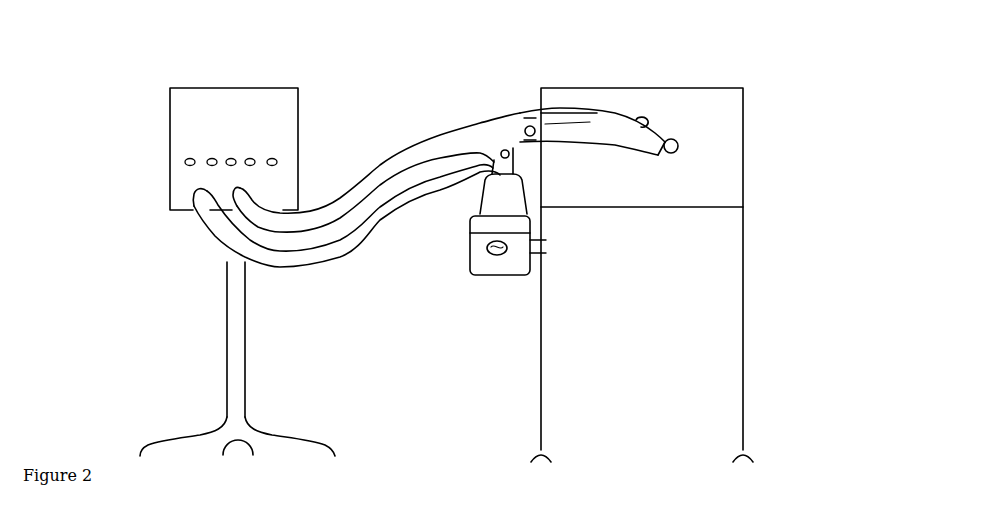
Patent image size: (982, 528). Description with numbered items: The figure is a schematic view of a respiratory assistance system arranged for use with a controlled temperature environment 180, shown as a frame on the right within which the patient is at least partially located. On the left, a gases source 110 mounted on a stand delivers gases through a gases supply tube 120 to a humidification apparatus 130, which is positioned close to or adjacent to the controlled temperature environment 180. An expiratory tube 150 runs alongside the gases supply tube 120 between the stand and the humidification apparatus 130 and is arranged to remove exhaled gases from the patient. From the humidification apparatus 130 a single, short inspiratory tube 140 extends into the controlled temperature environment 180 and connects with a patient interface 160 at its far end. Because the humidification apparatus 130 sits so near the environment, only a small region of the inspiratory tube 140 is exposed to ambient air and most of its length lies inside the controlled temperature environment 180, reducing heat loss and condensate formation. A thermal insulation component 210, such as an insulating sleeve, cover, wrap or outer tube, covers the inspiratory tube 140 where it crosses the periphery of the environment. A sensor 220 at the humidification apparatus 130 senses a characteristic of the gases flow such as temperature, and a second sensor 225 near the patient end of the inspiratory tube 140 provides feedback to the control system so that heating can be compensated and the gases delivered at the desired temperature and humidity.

The gases source 110 is at (183, 100).
The gases supply tube 120 is at (242, 247).
The humidification apparatus 130 is at (478, 263).
The inspiratory tube 140 is at (572, 138).
The expiratory tube 150 is at (395, 163).
The patient interface 160 is at (678, 148).
The controlled temperature environment 180 is at (745, 167).
The thermal insulation component 210 is at (530, 133).
The sensor 220 is at (505, 155).
The second sensor 225 is at (637, 150).